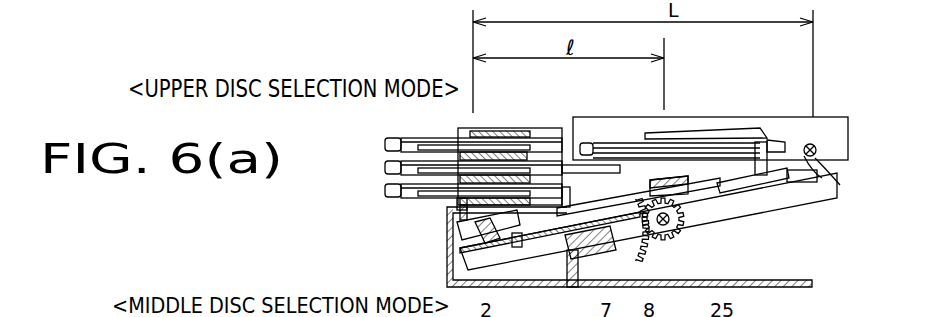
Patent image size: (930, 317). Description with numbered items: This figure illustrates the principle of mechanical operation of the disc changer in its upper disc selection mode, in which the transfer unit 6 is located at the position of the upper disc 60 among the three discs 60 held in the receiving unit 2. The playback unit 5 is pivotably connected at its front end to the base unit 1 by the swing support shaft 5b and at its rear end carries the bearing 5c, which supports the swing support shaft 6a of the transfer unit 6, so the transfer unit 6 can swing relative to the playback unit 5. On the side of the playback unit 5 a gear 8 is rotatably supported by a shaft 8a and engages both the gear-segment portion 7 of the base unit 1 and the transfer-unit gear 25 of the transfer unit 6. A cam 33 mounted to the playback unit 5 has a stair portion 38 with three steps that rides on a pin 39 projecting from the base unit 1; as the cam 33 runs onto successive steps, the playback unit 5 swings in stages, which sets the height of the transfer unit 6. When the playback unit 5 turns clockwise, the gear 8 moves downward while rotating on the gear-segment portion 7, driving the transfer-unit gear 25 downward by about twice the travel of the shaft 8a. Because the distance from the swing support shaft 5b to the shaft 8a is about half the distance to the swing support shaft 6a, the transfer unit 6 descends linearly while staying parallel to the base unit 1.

The base unit 1 is at (795, 287).
The receiving unit 2 is at (498, 128).
The playback unit 5 is at (828, 190).
The swing support shaft 5b is at (457, 218).
The bearing 5c is at (823, 155).
The transfer unit 6 is at (777, 127).
The swing support shaft 6a is at (815, 145).
The gear-segment portion 7 is at (640, 212).
The gear 8 is at (648, 212).
The shaft 8a is at (678, 222).
The transfer-unit gear 25 is at (697, 203).
The cam 33 is at (608, 236).
The stair portion 38 is at (640, 256).
The pin 39 is at (568, 267).
The disc 60 is at (385, 190).